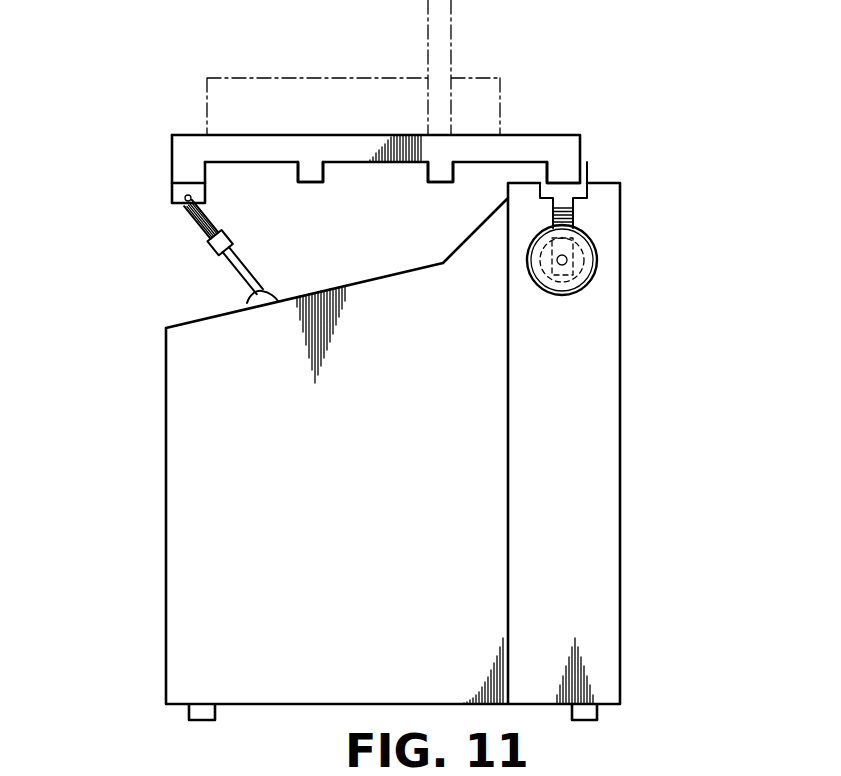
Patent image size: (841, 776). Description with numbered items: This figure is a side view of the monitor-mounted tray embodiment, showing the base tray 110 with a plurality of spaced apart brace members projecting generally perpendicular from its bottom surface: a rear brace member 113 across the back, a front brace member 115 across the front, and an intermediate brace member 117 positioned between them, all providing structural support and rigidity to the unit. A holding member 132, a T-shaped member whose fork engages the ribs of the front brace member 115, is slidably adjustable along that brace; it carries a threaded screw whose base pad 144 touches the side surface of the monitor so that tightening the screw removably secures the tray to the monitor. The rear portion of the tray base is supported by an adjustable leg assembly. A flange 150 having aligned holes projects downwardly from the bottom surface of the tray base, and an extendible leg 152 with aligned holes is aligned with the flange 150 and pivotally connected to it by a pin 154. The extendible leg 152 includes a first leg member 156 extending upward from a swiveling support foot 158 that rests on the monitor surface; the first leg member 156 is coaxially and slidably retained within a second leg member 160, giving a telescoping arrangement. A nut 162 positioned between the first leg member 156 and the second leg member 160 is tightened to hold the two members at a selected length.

The mounting plate 110 is at (556, 136).
The rear brace member 113 is at (205, 177).
The front brace member 115 is at (563, 160).
The intermediate brace member 117 is at (315, 178).
The holding member 132 is at (570, 210).
The base pad 144 is at (586, 283).
The flange 150 is at (173, 192).
The pin 154 is at (184, 198).
The second leg member 160 is at (200, 236).
The extendible leg 152 is at (194, 222).
The nut 162 is at (211, 252).
The first leg member 156 is at (242, 266).
The swiveling support foot 158 is at (261, 292).